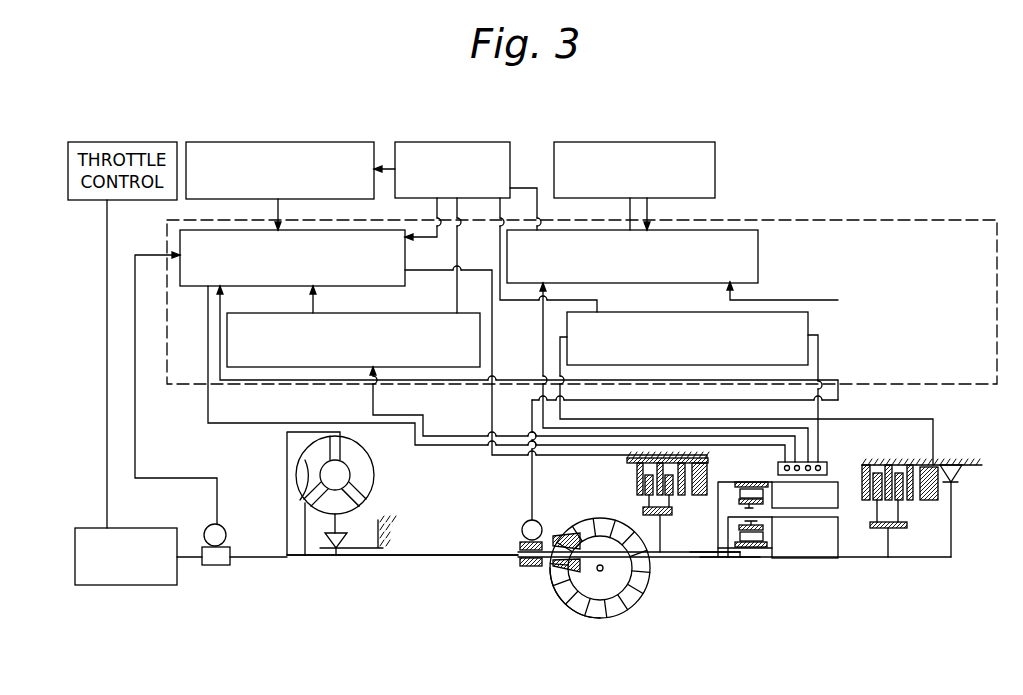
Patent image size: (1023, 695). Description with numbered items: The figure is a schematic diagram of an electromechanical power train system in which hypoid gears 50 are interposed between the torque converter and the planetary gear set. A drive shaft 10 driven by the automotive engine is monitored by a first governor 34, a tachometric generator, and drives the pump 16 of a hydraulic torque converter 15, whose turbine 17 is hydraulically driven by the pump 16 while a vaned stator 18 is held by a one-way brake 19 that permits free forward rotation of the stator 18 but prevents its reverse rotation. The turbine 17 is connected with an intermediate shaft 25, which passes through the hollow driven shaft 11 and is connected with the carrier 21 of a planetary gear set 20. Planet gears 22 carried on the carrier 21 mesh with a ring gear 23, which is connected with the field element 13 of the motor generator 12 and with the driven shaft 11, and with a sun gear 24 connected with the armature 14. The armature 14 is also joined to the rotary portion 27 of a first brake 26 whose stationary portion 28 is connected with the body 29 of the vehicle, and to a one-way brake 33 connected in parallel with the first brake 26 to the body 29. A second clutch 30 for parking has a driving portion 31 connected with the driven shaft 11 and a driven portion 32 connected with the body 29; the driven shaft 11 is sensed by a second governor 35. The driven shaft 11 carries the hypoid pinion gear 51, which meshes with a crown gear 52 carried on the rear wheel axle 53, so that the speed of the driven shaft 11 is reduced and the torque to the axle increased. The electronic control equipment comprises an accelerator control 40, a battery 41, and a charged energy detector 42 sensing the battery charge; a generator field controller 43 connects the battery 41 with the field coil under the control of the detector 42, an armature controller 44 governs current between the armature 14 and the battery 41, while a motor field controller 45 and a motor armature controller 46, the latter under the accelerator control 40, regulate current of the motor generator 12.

The drive shaft 10 is at (188, 558).
The driven shaft 11 is at (713, 560).
The motor generator 12 is at (779, 542).
The field element 13 is at (724, 500).
The armature 14 is at (826, 549).
The hydraulic torque converter 15 is at (345, 578).
The pump 16 is at (365, 468).
The turbine 17 is at (305, 470).
The stator 18 is at (345, 503).
The one-way brake 19 is at (327, 535).
The planetary gear set 20 is at (740, 560).
The carrier 21 is at (697, 557).
The planet gears 22 is at (772, 482).
The field core 23 is at (730, 482).
The sun gear 24 is at (765, 548).
The intermediate shaft 25 is at (460, 556).
The first brake 26 is at (661, 515).
The rotary portion 27 is at (672, 503).
The stationary portion 28 is at (638, 475).
The body 29 is at (912, 463).
The second clutch 30 is at (927, 513).
The driving portion 31 is at (902, 502).
The driven portion 32 is at (888, 463).
The one-way brake 33 is at (955, 463).
The first governor 34 is at (208, 528).
The second governor 35 is at (522, 530).
The accelerator control 40 is at (630, 142).
The battery 41 is at (450, 142).
The charged energy detector 42 is at (281, 142).
The field controller 43 is at (193, 287).
The armature controller 44 is at (405, 313).
The field controller 45 is at (758, 258).
The armature controller 46 is at (648, 313).
The hypoid gears 50 is at (595, 620).
The hypoid pinion gear 51 is at (545, 568).
The crown gear 52 is at (565, 605).
The rear wheel axle 53 is at (602, 572).